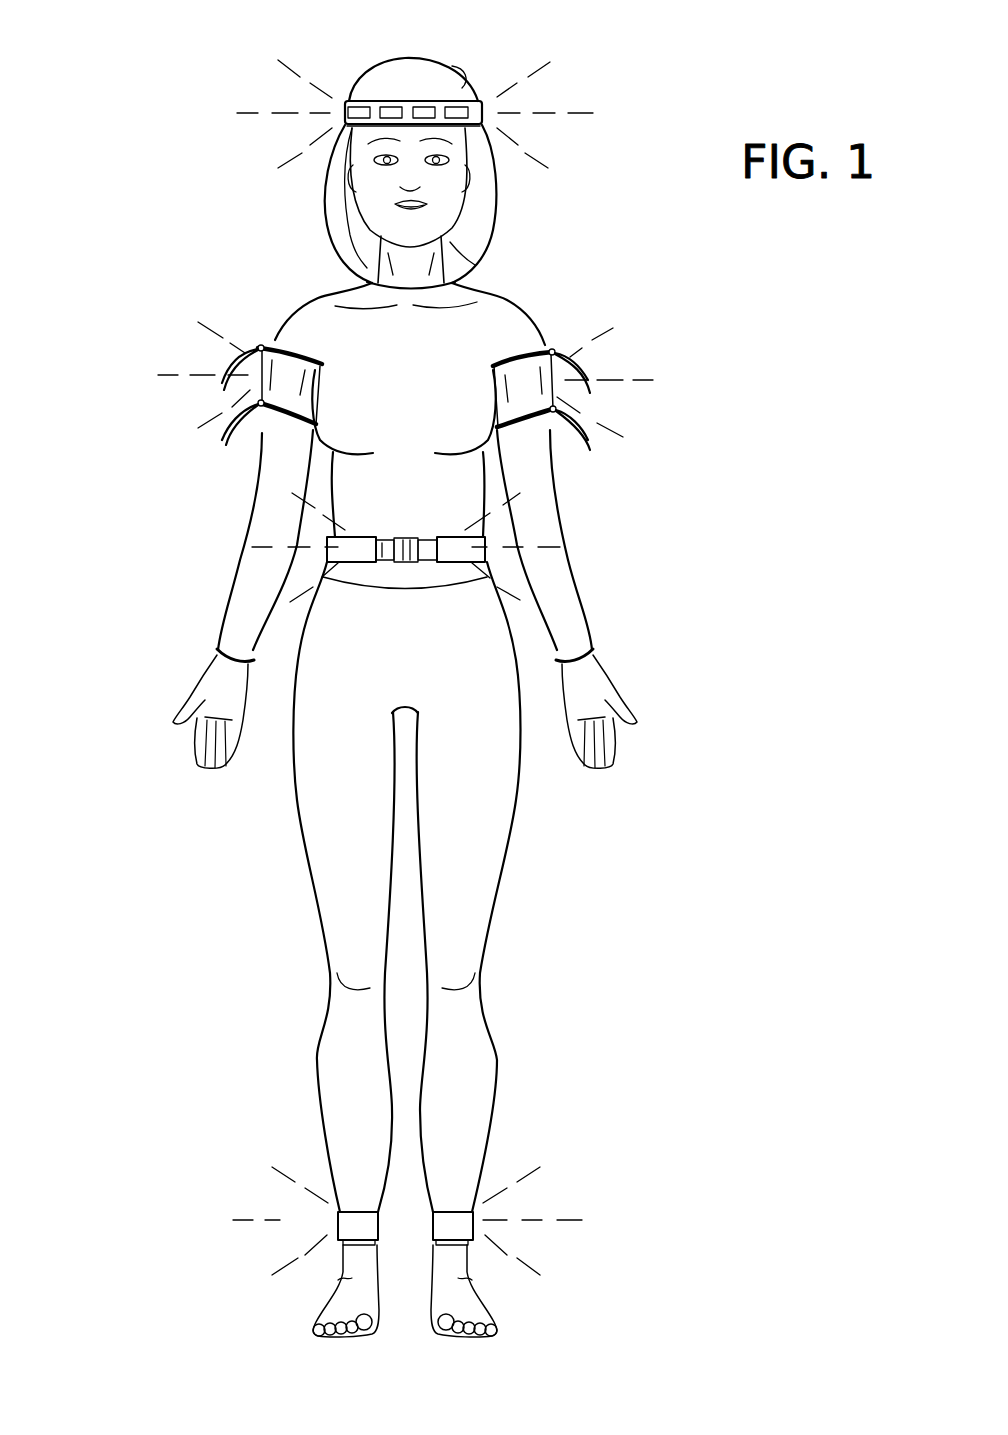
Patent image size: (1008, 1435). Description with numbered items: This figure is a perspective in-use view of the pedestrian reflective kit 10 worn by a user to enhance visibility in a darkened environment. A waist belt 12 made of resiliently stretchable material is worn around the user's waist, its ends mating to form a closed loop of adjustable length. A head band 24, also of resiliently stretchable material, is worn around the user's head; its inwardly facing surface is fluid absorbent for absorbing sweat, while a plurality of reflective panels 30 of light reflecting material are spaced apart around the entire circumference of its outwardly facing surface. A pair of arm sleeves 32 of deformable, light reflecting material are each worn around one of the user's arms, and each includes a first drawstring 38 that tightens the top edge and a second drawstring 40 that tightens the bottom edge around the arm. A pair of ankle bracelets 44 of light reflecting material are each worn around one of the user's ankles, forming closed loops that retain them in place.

The pedestrian reflective kit 10 is at (120, 119).
The waist belt 12 is at (447, 538).
The head band 24 is at (372, 101).
The reflective panels 30 is at (457, 107).
The arm sleeves 32 is at (268, 345).
The first drawstring 38 is at (567, 358).
The second drawstring 40 is at (587, 422).
The ankle bracelets 44 is at (337, 1222).